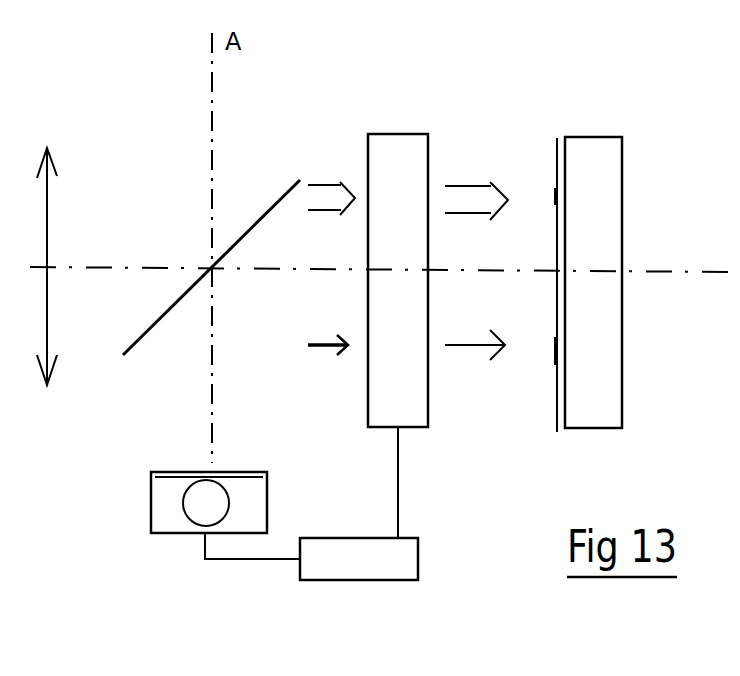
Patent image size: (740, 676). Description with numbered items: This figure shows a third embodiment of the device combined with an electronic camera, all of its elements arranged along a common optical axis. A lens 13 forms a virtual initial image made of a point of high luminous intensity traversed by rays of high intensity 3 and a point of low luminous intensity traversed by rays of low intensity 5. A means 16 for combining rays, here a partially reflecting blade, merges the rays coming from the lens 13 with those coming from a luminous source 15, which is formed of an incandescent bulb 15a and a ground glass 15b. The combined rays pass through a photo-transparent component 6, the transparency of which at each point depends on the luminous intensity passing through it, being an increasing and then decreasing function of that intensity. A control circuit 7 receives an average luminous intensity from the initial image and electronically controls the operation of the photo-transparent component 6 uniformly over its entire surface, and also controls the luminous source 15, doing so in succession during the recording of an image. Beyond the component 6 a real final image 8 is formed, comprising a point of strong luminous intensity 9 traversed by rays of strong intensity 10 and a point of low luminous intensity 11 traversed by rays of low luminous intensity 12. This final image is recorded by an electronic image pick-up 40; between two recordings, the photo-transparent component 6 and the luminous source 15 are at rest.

The rays of high intensity 3 is at (329, 197).
The rays of low intensity 5 is at (327, 348).
The photo-transparent component 6 is at (410, 413).
The control circuit 7 is at (367, 567).
The real final image 8 is at (556, 247).
The point of strong luminous intensity 9 is at (555, 202).
The rays of strong intensity 10 is at (463, 198).
The point of low luminous intensity 11 is at (554, 350).
The rays of low luminous intensity 12 is at (462, 348).
The lens 13 is at (47, 217).
The luminous source 15 is at (177, 501).
The incandescent bulb 15a is at (190, 503).
The ground glass 15b is at (161, 472).
The partially reflecting blade 16 is at (258, 218).
The electronic image pick-up 40 is at (605, 225).